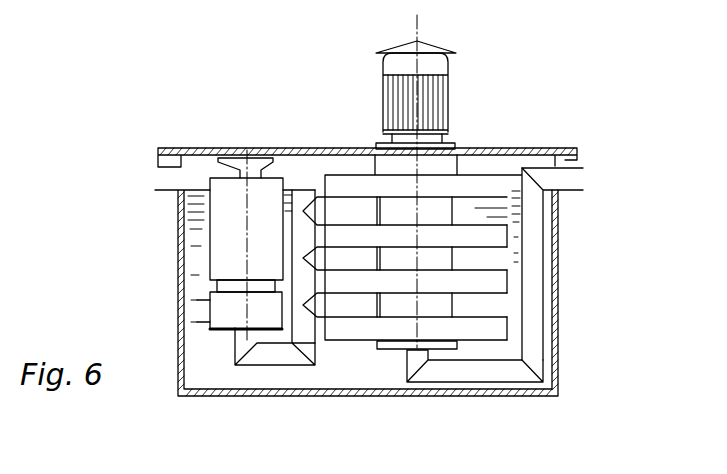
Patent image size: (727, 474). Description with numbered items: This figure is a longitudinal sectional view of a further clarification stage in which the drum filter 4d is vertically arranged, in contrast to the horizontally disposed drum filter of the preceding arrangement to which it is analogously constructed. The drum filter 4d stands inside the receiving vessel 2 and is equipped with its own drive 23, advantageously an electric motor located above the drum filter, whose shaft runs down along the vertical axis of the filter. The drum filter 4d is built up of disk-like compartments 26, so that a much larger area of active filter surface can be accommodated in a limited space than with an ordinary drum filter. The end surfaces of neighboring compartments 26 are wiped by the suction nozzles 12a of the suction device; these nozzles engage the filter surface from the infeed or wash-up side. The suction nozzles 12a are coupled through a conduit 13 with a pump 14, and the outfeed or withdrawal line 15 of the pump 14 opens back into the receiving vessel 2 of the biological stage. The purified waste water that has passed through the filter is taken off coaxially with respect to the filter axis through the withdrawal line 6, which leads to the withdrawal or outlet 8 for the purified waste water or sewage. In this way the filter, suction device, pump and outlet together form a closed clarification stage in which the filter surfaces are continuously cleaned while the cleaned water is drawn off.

The receiving vessel 2 is at (236, 400).
The drum filter 4d is at (348, 186).
The withdrawal line 6 is at (470, 373).
The withdrawal or outlet 8 is at (578, 188).
The suction nozzles 12a is at (357, 308).
The conduit 13 is at (275, 358).
The pump 14 is at (217, 235).
The withdrawal line of the pump 15 is at (203, 312).
The drive 23 is at (445, 67).
The disk-like compartments 26 is at (497, 283).